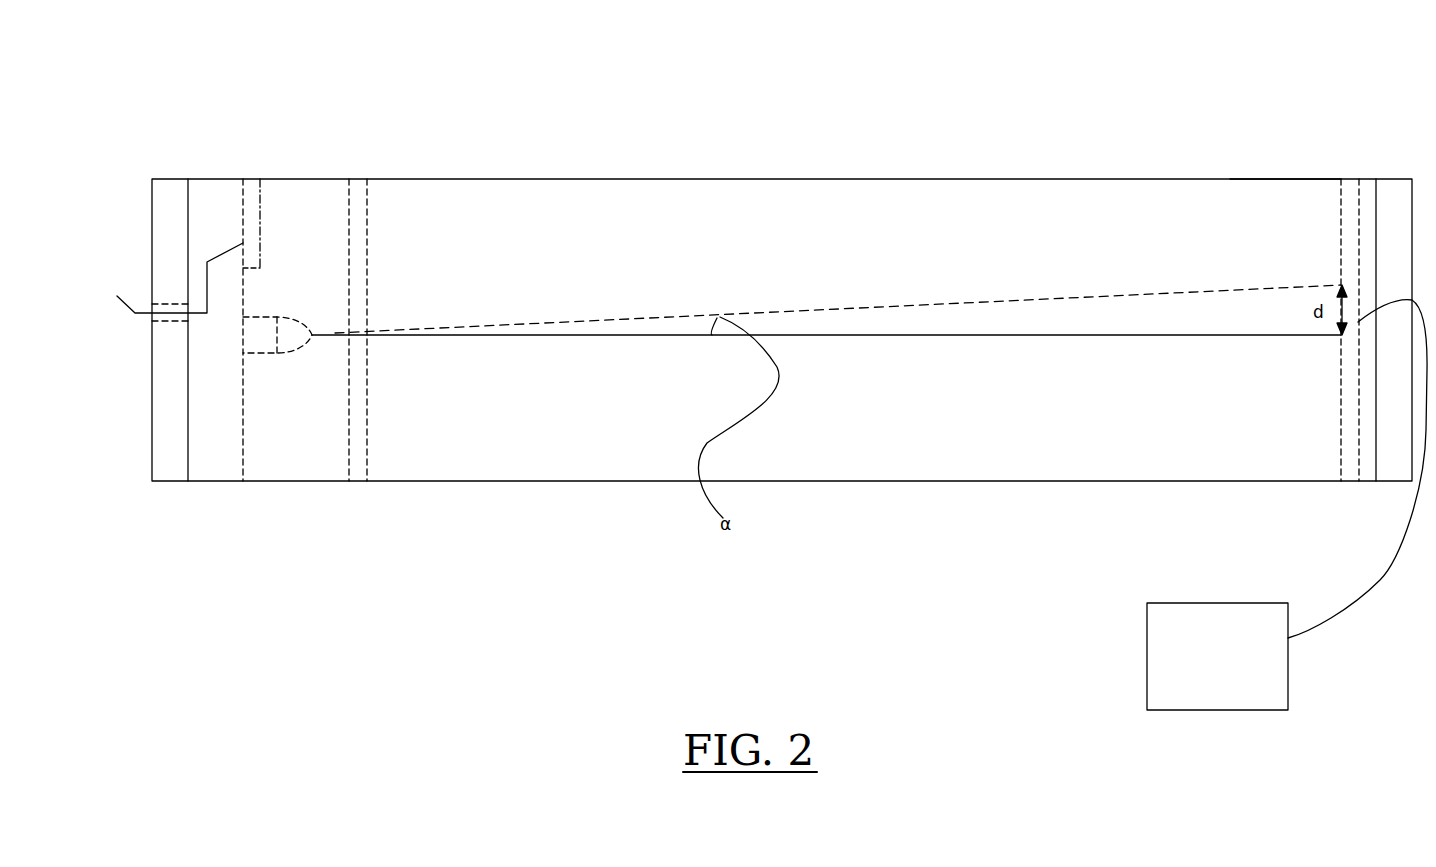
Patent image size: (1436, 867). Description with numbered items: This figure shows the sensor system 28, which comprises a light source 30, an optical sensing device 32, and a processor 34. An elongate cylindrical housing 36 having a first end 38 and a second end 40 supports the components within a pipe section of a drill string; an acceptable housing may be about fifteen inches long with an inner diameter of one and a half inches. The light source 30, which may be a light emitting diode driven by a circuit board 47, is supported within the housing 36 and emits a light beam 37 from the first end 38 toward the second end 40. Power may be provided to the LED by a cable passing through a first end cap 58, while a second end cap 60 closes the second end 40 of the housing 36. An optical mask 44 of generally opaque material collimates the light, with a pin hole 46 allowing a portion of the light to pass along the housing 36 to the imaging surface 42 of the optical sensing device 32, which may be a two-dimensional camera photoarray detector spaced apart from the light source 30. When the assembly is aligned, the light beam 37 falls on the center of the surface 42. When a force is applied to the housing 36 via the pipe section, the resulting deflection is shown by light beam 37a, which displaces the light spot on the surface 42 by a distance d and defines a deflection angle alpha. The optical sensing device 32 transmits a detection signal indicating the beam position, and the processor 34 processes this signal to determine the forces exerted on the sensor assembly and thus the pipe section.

The sensor system 28 is at (738, 138).
The light source 30 is at (259, 355).
The optical sensing device 32 is at (1360, 179).
The processor 34 is at (1147, 658).
The elongate cylindrical housing 36 is at (505, 481).
The light beam 37 is at (990, 337).
The deflected light beam 37a is at (1132, 293).
The first end 38 is at (223, 179).
The second end 40 is at (1290, 179).
The imaging surface 42 is at (1340, 393).
The optical mask 44 is at (367, 481).
The pin hole 46 is at (367, 320).
The circuit board 47 is at (260, 233).
The first end cap 58 is at (170, 481).
The second end cap 60 is at (1393, 483).